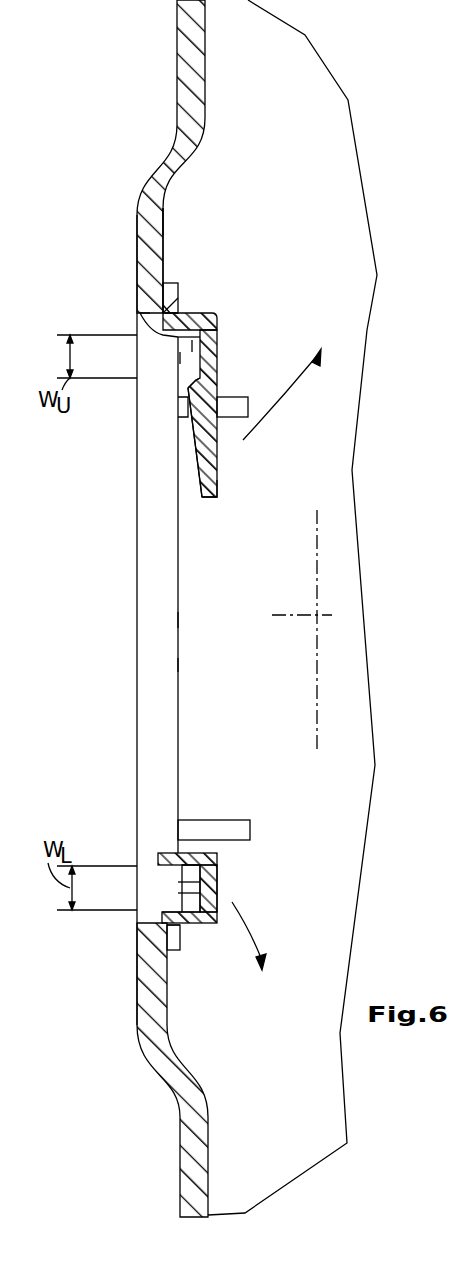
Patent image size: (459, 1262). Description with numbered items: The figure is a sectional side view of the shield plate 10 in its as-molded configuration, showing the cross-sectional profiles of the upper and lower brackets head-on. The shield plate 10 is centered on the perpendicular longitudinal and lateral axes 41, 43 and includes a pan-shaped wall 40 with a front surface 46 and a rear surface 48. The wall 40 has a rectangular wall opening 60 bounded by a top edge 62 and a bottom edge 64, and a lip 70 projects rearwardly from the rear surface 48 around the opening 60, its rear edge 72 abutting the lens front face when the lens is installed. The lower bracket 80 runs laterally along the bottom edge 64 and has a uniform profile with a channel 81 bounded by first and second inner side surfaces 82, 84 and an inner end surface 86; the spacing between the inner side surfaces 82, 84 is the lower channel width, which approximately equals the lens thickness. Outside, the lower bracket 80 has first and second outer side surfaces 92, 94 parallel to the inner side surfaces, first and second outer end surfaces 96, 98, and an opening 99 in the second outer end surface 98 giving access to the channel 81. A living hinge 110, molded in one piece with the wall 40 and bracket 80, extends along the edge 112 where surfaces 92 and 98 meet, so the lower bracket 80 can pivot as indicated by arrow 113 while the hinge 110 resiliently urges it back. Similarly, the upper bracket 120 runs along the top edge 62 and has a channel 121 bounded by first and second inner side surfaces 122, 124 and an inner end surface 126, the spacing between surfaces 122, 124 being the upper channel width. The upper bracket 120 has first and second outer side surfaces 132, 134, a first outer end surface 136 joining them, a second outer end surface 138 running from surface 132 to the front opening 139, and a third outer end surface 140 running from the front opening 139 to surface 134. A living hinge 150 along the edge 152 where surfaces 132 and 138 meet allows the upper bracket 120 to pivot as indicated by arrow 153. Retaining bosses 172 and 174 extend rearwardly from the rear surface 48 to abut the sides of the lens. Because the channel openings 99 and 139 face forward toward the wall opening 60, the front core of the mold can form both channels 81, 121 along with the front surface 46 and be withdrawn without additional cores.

The shield plate 10 is at (124, 124).
The wall 40 is at (163, 512).
The longitudinal axis 41 is at (317, 712).
The lateral axis 43 is at (317, 615).
The front surface 46 is at (137, 229).
The rear surface 48 is at (163, 233).
The wall opening 60 is at (163, 583).
The top edge 62 is at (178, 290).
The bottom edge 64 is at (140, 935).
The lip 70 is at (172, 621).
The rear edge 72 is at (178, 666).
The lower bracket 80 is at (188, 882).
The channel 81 is at (195, 866).
The first inner side surface 82 is at (160, 915).
The second inner side surface 84 is at (180, 877).
The inner end surface 86 is at (178, 881).
The first outer side surface 92 is at (195, 925).
The second outer side surface 94 is at (215, 862).
The first outer end surface 96 is at (218, 885).
The second outer end surface 98 is at (160, 925).
The opening 99 is at (160, 894).
The hinge 110 is at (180, 950).
The edge 112 is at (180, 945).
The arrow 113 is at (247, 920).
The upper bracket 120 is at (185, 405).
The channel 121 is at (185, 347).
The first inner side surface 122 is at (162, 335).
The second inner side surface 124 is at (193, 382).
The inner end surface 126 is at (190, 370).
The first outer side surface 132 is at (215, 325).
The second outer side surface 134 is at (213, 497).
The first outer end surface 136 is at (217, 362).
The second outer end surface 138 is at (140, 312).
The front opening 139 is at (172, 360).
The third outer end surface 140 is at (197, 453).
The hinge 150 is at (165, 308).
The edge 152 is at (165, 310).
The arrow 153 is at (290, 413).
The second upper retaining boss 172 is at (244, 398).
The second lower retaining boss 174 is at (205, 820).